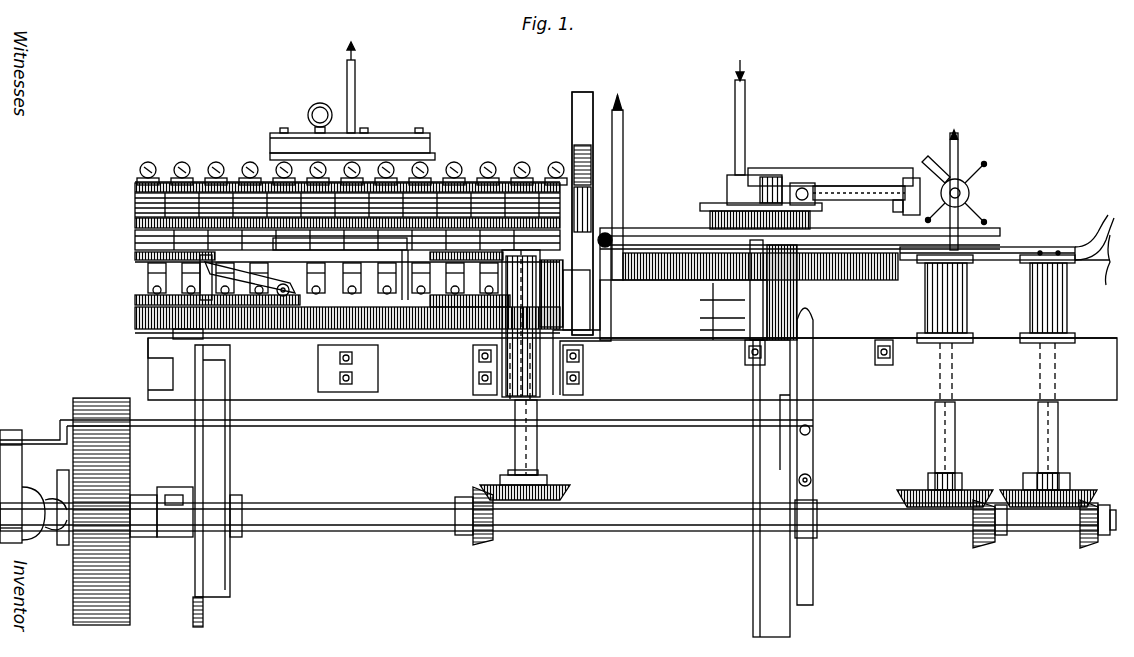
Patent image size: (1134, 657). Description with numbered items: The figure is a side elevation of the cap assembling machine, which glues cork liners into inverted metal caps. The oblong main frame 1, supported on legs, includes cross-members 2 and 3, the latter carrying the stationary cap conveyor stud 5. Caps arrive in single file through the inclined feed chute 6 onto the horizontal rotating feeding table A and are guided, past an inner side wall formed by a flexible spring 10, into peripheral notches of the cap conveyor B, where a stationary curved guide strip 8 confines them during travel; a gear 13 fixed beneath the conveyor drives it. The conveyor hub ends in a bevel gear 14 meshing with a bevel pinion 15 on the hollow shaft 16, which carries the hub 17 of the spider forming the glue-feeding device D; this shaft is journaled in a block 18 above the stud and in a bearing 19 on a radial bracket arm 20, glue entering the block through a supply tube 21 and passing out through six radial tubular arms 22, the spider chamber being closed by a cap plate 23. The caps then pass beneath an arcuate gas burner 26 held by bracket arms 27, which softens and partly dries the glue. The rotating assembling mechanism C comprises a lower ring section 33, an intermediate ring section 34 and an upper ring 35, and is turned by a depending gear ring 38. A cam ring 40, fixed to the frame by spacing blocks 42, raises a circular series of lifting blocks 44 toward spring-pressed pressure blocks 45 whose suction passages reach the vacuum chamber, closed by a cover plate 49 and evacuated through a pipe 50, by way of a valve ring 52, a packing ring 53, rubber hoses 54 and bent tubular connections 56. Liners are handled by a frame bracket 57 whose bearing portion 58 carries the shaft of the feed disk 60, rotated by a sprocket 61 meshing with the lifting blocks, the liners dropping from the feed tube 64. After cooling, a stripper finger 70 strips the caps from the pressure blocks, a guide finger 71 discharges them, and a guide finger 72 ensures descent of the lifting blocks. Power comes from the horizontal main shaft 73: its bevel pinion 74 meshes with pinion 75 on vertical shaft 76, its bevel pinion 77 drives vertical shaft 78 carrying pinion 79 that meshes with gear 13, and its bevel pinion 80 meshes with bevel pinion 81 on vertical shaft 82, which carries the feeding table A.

The main frame 1 is at (200, 357).
The cross-member 2 is at (388, 338).
The cross-member 3 is at (735, 327).
The cap conveyor stud 5 is at (800, 294).
The inclined feed chute 6 is at (1102, 232).
The stationary curved guide strip 8 is at (672, 258).
The flexible spring 10 is at (1017, 248).
The gear 13 is at (884, 278).
The bevel gear 14 is at (712, 206).
The bevel pinion 15 is at (800, 183).
The hollow shaft 16 is at (863, 188).
The hub 17 is at (940, 176).
The block 18 is at (727, 186).
The bearing 19 is at (906, 208).
The radial bracket arm 20 is at (830, 170).
The supply tube 21 is at (746, 122).
The tubular arms 22 is at (958, 164).
The cap plate 23 is at (976, 198).
The arcuate gas burner 26 is at (650, 230).
The bracket arms 27 is at (748, 298).
The lower ring section 33 is at (140, 266).
The intermediate ring section 34 is at (135, 216).
The upper ring 35 is at (135, 187).
The gear ring 38 is at (308, 328).
The cam ring 40 is at (135, 302).
The spacing blocks 42 is at (150, 324).
The lifting blocks 44 is at (136, 252).
The pressure blocks 45 is at (135, 237).
The cover plate 49 is at (297, 130).
The pipe 50 is at (357, 84).
The valve ring 52 is at (436, 157).
The packing ring 53 is at (432, 143).
The rubber hose 54 is at (252, 163).
The bent tubular connection 56 is at (150, 165).
The frame bracket 57 is at (490, 400).
The bearing portion 58 is at (505, 364).
The feed disk 60 is at (560, 248).
The sprocket 61 is at (576, 300).
The feed tube 64 is at (572, 115).
The stripper finger 70 is at (316, 277).
The guide finger 71 is at (354, 277).
The guide finger 72 is at (275, 278).
The main shaft 73 is at (405, 533).
The bevel pinion 74 is at (488, 542).
The pinion 75 is at (572, 494).
The vertical shaft 76 is at (538, 457).
The bevel pinion 77 is at (983, 549).
The vertical shaft 78 is at (933, 454).
The pinion 79 is at (970, 286).
The bevel pinion 80 is at (1090, 549).
The bevel pinion 81 is at (1012, 490).
The vertical shaft 82 is at (1060, 454).
The feeding table A is at (1092, 277).
The cap conveyor B is at (692, 250).
The assembling mechanism C is at (200, 163).
The glue-feeding device D is at (965, 192).